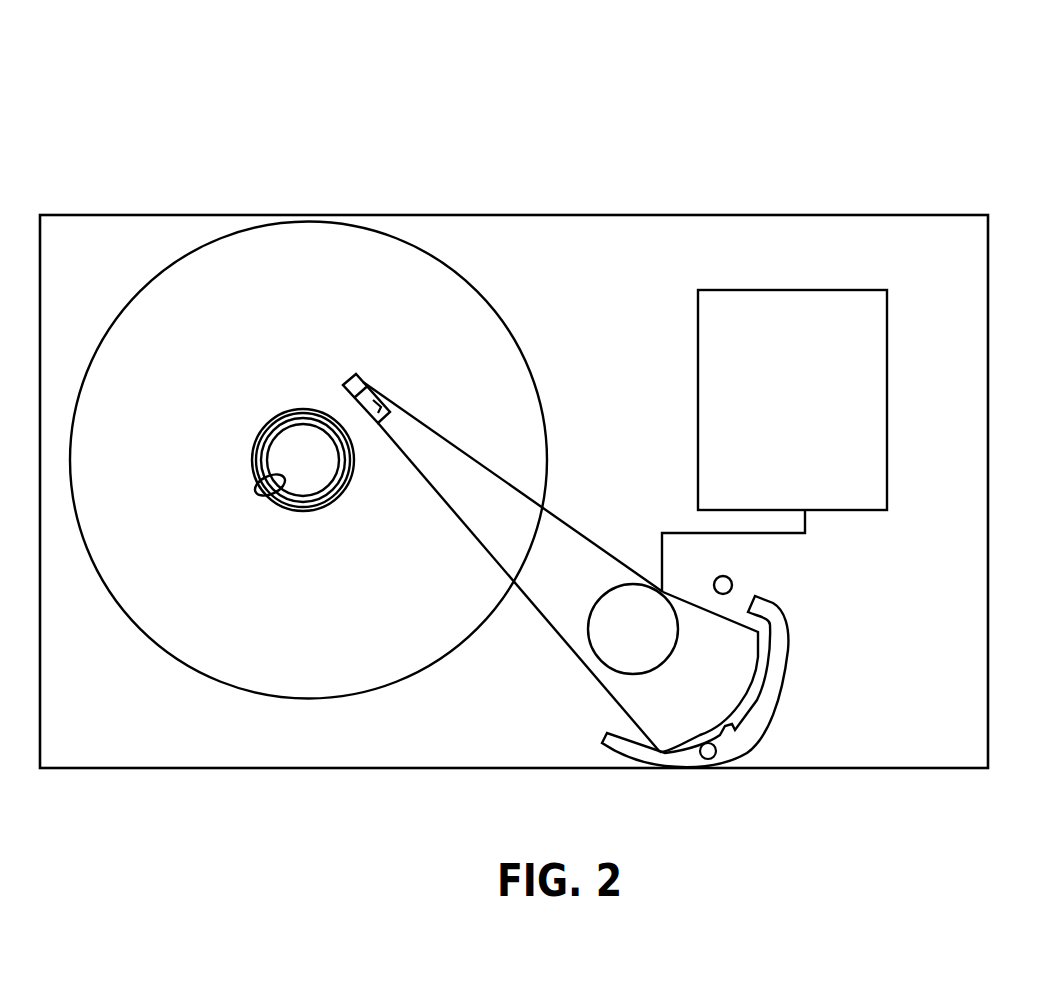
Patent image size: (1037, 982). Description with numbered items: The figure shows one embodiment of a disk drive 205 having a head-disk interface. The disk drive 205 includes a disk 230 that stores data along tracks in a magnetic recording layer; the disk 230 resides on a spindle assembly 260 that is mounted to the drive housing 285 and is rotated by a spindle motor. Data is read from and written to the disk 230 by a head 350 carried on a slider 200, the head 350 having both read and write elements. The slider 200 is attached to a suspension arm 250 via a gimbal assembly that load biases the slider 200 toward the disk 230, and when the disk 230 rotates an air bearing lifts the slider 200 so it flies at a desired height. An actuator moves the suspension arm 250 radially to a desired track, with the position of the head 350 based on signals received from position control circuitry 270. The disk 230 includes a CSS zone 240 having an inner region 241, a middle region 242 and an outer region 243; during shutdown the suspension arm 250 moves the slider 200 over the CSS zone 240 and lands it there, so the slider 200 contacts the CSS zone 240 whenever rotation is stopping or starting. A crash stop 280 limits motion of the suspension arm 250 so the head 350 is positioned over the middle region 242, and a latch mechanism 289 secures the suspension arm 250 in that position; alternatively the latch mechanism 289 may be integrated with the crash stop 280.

The disk drive 205 is at (948, 128).
The drive housing 285 is at (647, 215).
The disk 230 is at (185, 663).
The spindle assembly 260 is at (318, 472).
The inner region 241 is at (353, 483).
The middle region 242 is at (325, 503).
The outer region 243 is at (307, 507).
The CSS zone 240 is at (262, 493).
The suspension arm 250 is at (580, 533).
The slider 200 is at (355, 375).
The head 350 is at (375, 389).
The position control circuitry 270 is at (797, 456).
The crash stop 280 is at (732, 578).
The latch mechanism 289 is at (780, 683).